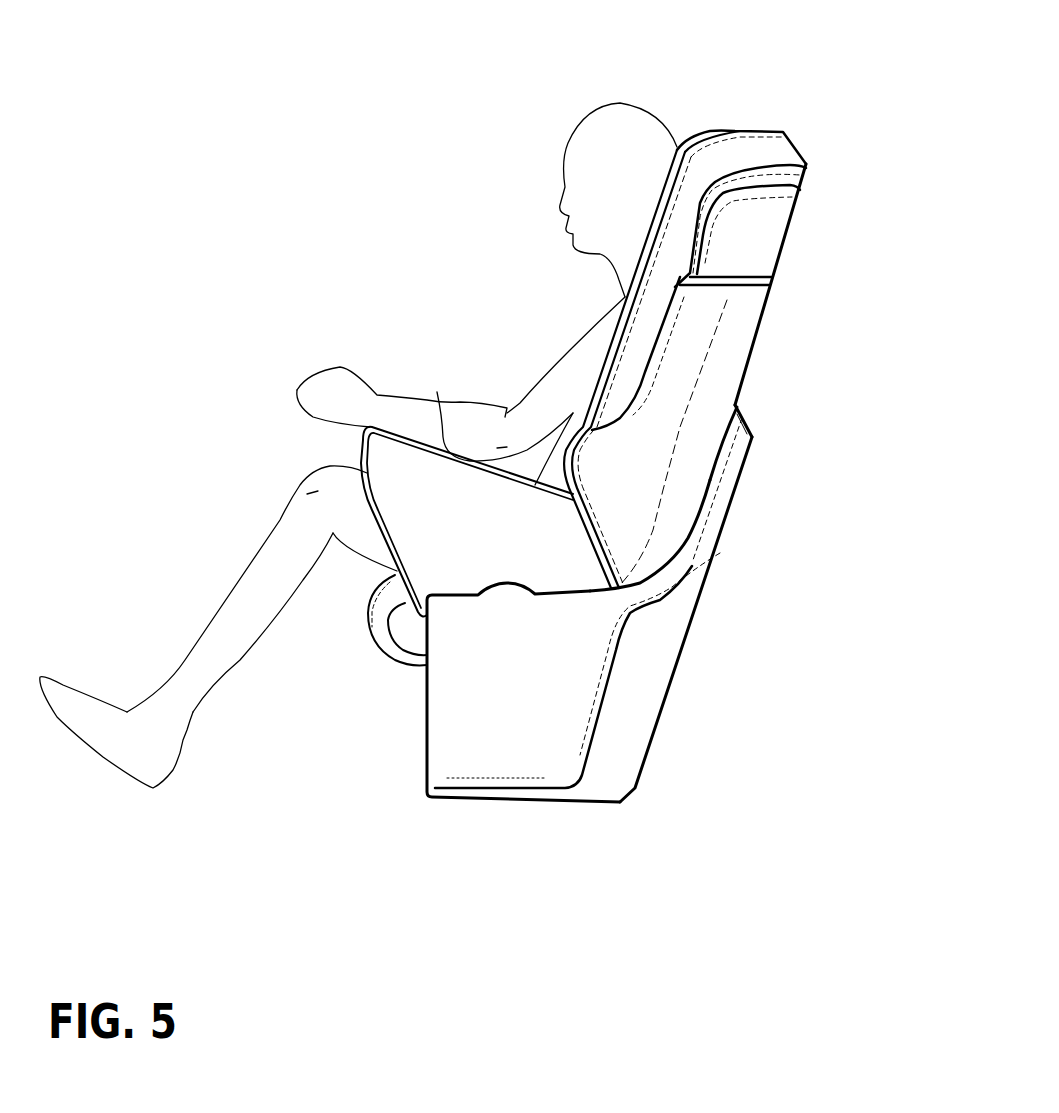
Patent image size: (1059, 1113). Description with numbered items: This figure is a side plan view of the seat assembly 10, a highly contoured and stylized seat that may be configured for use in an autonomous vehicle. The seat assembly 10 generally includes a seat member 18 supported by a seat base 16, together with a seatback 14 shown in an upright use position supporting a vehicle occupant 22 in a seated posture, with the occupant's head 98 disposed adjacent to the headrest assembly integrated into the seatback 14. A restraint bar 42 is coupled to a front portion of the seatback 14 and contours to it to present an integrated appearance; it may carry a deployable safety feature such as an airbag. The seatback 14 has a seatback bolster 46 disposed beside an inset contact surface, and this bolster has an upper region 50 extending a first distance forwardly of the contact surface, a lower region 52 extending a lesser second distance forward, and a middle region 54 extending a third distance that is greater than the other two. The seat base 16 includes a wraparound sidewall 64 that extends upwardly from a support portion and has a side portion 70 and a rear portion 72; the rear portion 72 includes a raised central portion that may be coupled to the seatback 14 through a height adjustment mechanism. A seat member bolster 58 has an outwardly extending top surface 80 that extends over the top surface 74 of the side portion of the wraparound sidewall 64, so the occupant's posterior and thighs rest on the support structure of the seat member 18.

The seat assembly 10 is at (832, 193).
The seatback 14 is at (740, 366).
The seat base 16 is at (462, 752).
The seat member 18 is at (387, 639).
The vehicle occupant 22 is at (637, 167).
The restraint bar 42 is at (757, 150).
The second seatback bolster 46 is at (606, 507).
The upper region 50 is at (690, 330).
The lower region 52 is at (625, 568).
The middle region 54 is at (603, 462).
The seat member bolster 58 is at (423, 531).
The wraparound sidewall 64 is at (565, 670).
The second side portion 70 is at (490, 707).
The rear portion 72 is at (707, 511).
The top surface 74 is at (497, 588).
The top surface 80 is at (437, 392).
The head 98 is at (587, 145).